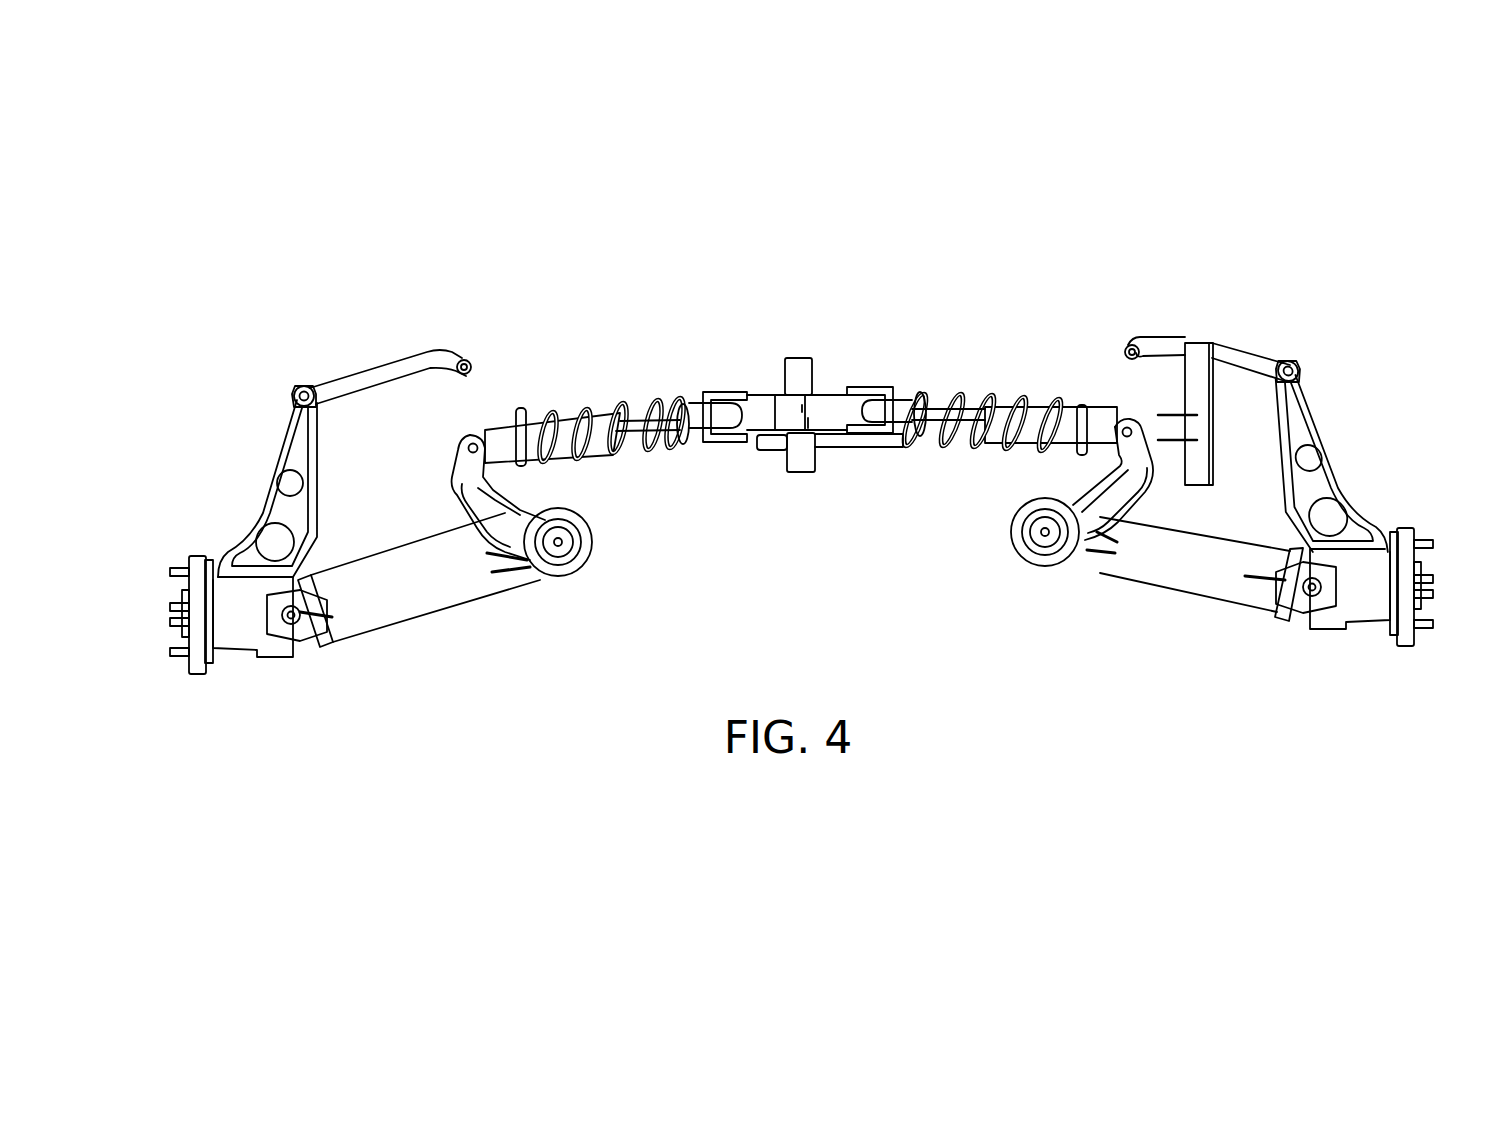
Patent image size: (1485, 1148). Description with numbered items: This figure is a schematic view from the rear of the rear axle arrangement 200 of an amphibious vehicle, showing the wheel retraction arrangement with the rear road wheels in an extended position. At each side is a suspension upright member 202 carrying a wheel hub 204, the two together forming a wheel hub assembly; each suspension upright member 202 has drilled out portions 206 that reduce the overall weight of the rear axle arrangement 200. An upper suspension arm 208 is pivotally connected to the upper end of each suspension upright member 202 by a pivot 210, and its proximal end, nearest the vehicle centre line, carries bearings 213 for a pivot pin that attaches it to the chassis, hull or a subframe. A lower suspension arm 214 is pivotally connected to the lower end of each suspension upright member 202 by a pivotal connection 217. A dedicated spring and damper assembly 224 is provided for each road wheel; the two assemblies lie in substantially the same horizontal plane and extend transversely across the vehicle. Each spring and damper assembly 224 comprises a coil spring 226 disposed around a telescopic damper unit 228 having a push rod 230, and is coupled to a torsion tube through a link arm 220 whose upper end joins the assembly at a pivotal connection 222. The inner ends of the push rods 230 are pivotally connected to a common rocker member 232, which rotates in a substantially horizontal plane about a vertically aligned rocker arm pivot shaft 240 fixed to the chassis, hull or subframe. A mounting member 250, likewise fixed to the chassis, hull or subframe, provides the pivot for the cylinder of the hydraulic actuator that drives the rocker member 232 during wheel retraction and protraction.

The rear axle arrangement 200 is at (745, 293).
The suspension upright member 202 is at (279, 440).
The wheel hub 204 is at (177, 559).
The drilled out portions 206 is at (281, 548).
The upper suspension arm 208 is at (386, 370).
The pivot 210 is at (300, 388).
The bearings 213 is at (466, 360).
The lower suspension arm 214 is at (435, 595).
The pivotal connection 217 is at (295, 624).
The link arm 220 is at (468, 509).
The pivotal connection 222 is at (474, 444).
The spring and damper assembly 224 is at (801, 421).
The coil spring 226 is at (664, 440).
The telescopic damper unit 228 is at (599, 457).
The push rod 230 is at (658, 448).
The rocker member 232 is at (828, 458).
The rocker arm pivot shaft 240 is at (801, 358).
The mounting member 250 is at (1197, 343).